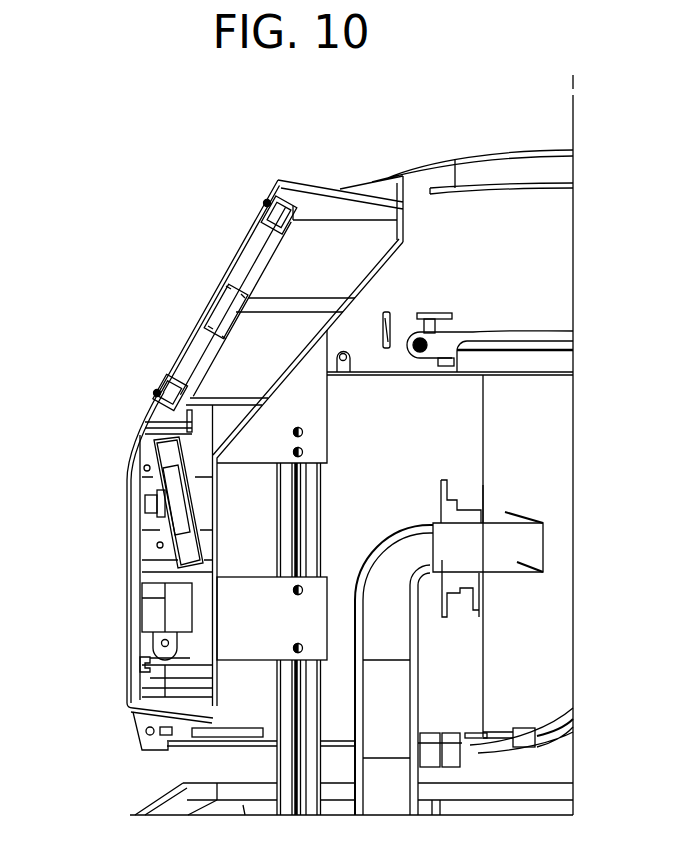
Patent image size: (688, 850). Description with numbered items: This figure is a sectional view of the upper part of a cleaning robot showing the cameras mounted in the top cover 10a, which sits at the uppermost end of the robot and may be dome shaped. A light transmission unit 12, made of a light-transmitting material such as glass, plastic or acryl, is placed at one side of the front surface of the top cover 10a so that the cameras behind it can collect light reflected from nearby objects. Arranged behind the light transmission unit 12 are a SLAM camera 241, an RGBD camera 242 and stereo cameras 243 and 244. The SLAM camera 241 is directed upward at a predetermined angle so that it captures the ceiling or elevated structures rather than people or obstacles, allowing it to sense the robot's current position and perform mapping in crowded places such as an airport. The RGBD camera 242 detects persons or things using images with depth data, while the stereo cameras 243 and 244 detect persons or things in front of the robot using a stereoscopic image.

The top cover 10a is at (473, 154).
The light transmission unit 12 is at (140, 432).
The SLAM camera 241 is at (220, 302).
The RGBD camera 242 is at (150, 612).
The stereo camera 243 is at (143, 462).
The stereo camera 244 is at (140, 662).